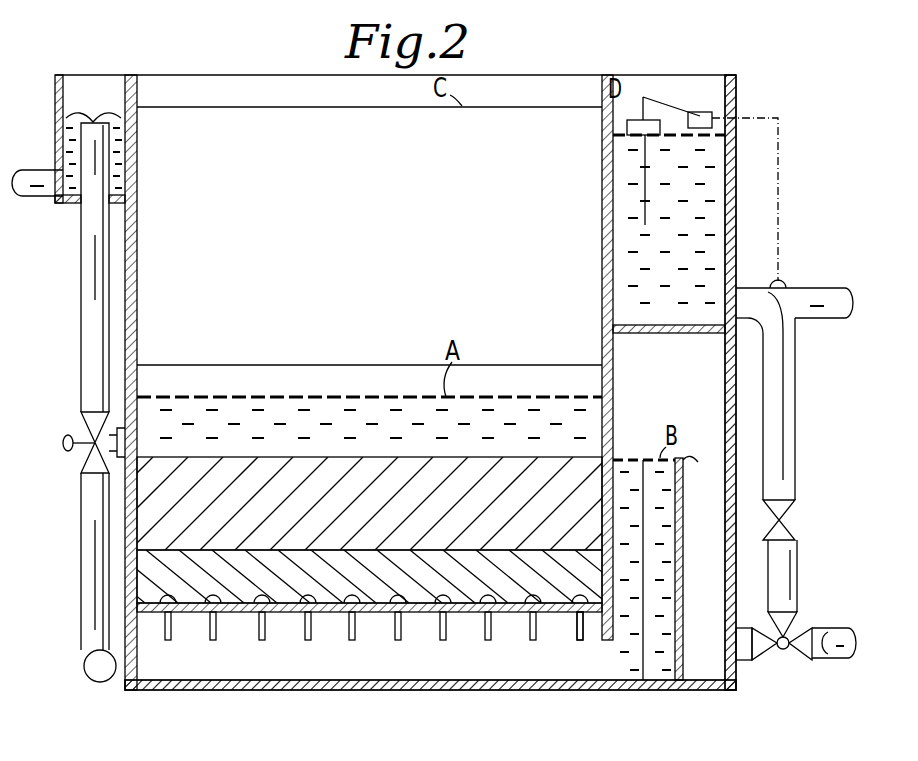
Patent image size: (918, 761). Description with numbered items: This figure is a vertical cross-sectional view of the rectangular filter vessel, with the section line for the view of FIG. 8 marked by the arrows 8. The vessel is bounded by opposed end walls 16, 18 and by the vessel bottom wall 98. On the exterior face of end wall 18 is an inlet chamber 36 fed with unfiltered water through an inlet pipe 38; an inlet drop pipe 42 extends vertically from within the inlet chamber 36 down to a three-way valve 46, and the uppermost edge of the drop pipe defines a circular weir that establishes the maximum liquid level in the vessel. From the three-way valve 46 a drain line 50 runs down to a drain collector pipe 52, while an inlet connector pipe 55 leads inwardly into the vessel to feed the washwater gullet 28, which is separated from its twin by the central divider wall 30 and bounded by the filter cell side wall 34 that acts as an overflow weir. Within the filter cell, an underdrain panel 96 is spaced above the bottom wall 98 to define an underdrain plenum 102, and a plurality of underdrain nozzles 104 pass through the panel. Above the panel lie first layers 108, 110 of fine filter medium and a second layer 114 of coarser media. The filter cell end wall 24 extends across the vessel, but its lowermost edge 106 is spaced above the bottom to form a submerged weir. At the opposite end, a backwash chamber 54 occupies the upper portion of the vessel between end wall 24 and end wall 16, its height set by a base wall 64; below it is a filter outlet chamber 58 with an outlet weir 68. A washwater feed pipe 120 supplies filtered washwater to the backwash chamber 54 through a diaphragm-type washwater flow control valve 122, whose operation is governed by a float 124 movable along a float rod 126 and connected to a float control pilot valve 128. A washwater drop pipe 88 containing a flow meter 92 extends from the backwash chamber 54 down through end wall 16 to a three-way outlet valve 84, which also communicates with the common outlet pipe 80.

The end wall 16 is at (735, 96).
The end wall 18 is at (125, 356).
The filter cell end wall 24 is at (602, 226).
The washwater gullet 28 is at (745, 658).
The central divider wall 30 is at (322, 166).
The filter cell side wall 34 is at (370, 368).
The inlet chamber 36 is at (55, 100).
The inlet pipe 38 is at (35, 170).
The inlet drop pipe 42 is at (88, 331).
The three-way valve 46 is at (83, 426).
The drain line 50 is at (90, 556).
The drain collector pipe 52 is at (86, 658).
The backwash chamber 54 is at (712, 173).
The inlet connector pipe 55 is at (128, 428).
The filter outlet chamber 58 is at (715, 388).
The base wall 64 is at (648, 326).
The outlet weir 68 is at (670, 612).
The common outlet pipe 80 is at (838, 628).
The three-way outlet valve 84 is at (790, 655).
The washwater drop pipe 88 is at (797, 381).
The flow meter 92 is at (795, 521).
The underdrain panel 96 is at (369, 634).
The vessel bottom wall 98 is at (530, 688).
The underdrain plenum 102 is at (263, 668).
The underdrain nozzle 104 is at (312, 628).
The lowermost edge 106 is at (605, 645).
The first layer 108 is at (300, 443).
The first layer 110 is at (150, 572).
The second layer 114 is at (148, 501).
The washwater feed pipe 120 is at (826, 277).
The washwater flow control valve 122 is at (783, 276).
The float 124 is at (638, 120).
The float rod 126 is at (648, 208).
The float control pilot valve 128 is at (705, 112).
The section line 8- 8 is at (597, 418).